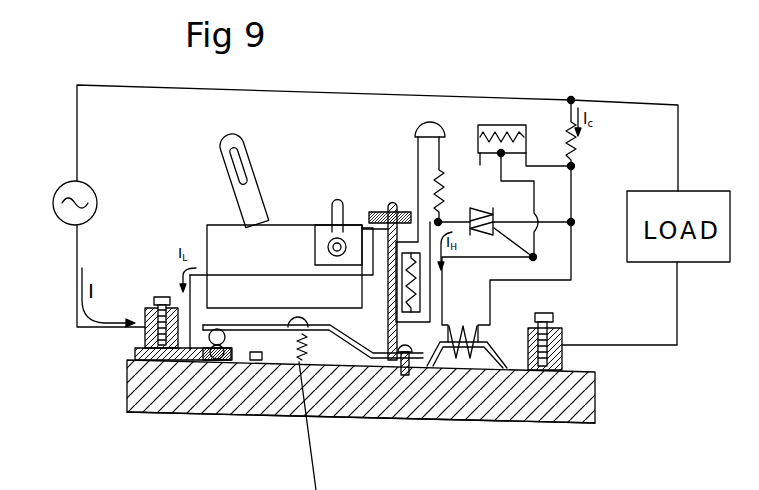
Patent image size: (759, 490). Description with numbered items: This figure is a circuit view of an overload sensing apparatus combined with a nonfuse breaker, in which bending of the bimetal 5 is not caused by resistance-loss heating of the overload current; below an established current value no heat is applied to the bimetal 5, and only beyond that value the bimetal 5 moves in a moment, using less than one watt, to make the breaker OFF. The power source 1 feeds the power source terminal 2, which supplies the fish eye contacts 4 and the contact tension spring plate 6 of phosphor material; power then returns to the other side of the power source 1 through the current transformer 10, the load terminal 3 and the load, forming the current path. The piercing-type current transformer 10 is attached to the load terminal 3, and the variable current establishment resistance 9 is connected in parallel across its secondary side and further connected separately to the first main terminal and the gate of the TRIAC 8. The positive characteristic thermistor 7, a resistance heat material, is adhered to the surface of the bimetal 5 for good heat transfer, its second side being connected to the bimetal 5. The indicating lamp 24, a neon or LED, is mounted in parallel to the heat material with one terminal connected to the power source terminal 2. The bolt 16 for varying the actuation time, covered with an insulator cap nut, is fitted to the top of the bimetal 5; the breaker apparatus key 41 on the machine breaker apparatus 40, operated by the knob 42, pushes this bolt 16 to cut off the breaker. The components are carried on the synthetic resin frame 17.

The power source 1 is at (58, 217).
The power source terminal 2 is at (131, 368).
The load terminal 3 is at (596, 424).
The fish eye contacts 4 is at (166, 416).
The bimetal 5 is at (380, 362).
The contact tension spring plate 6 is at (271, 333).
The positive characteristic thermistor 7 is at (420, 291).
The TRIAC 8 is at (478, 205).
The current establishment resistance 9 is at (513, 130).
The current transformer 10 is at (452, 350).
The bolt for driving time control 16 is at (373, 210).
The synthetic resin frame 17 is at (215, 413).
The indicating lamp 24 is at (433, 122).
The machine breaker apparatus 40 is at (207, 225).
The breaker apparatus key 41 is at (333, 208).
The knob 42 is at (220, 135).